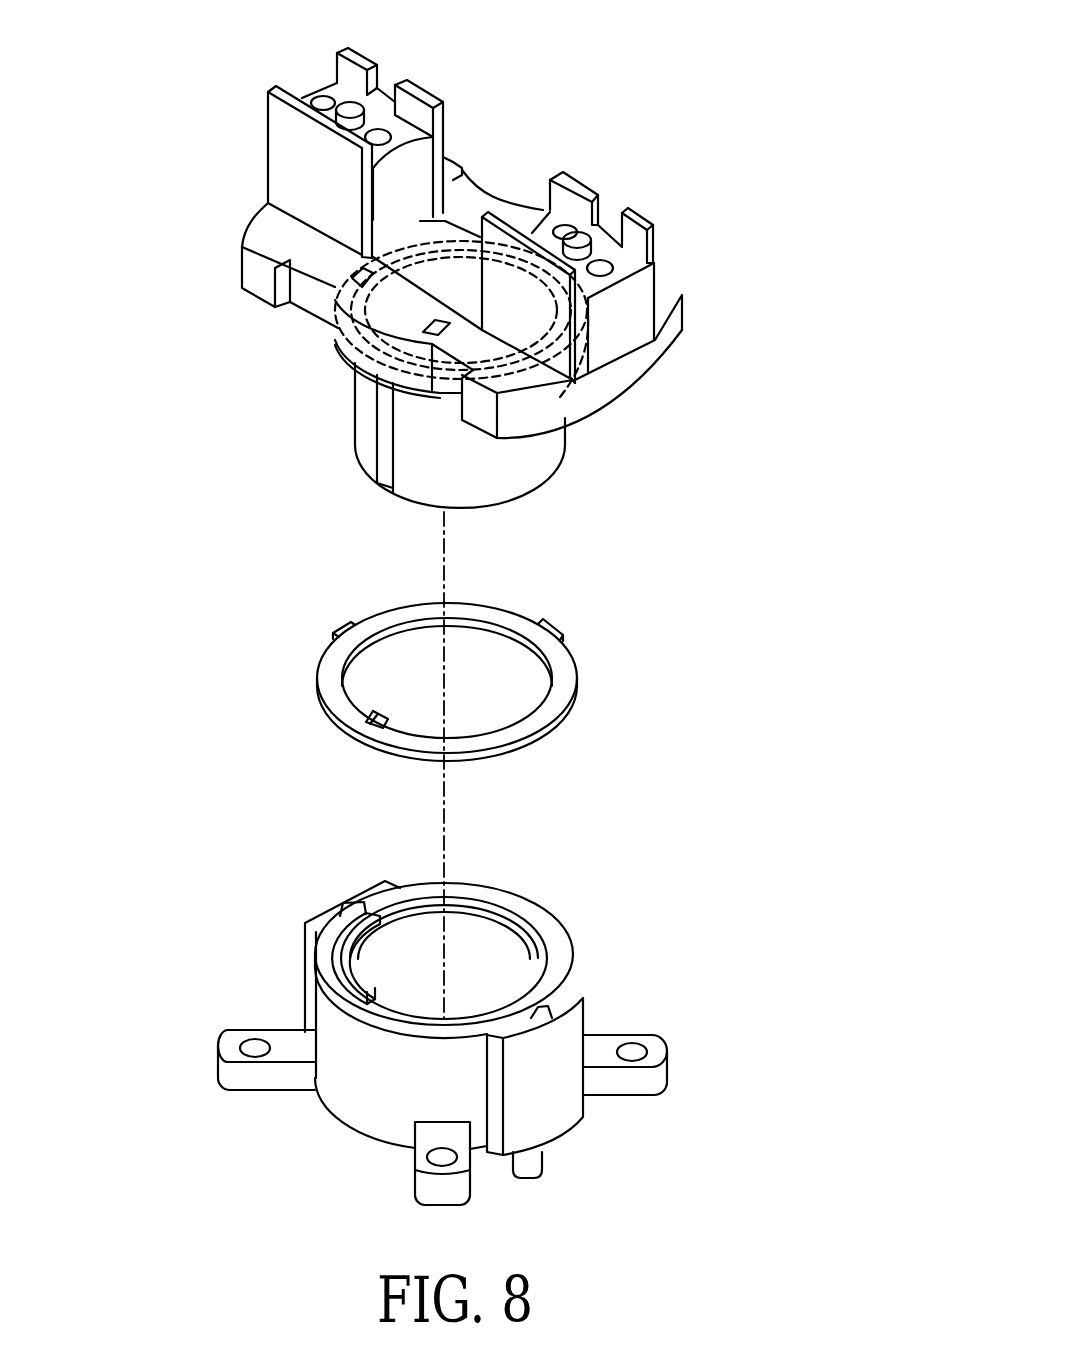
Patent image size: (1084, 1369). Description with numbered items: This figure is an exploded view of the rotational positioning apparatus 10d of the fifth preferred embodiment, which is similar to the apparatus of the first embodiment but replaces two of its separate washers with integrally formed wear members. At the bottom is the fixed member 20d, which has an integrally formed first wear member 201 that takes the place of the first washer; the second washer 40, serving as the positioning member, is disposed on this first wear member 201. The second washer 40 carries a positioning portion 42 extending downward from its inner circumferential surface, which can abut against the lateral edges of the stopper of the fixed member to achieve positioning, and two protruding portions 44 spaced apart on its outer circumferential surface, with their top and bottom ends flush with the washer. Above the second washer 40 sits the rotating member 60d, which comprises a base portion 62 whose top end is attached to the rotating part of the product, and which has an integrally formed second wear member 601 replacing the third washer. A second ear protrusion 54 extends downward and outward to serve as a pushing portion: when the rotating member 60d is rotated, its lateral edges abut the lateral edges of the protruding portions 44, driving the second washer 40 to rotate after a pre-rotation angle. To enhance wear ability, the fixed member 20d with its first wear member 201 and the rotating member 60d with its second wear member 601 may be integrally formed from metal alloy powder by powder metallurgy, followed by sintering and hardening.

The rotational positioning apparatus 10d is at (815, 35).
The rotating member 60d is at (640, 187).
The base portion 62 is at (273, 237).
The second wear member 601 is at (600, 327).
The second ear protrusion 54 is at (550, 392).
The second washer 40 is at (571, 609).
The protruding portions 44 is at (345, 622).
The positioning portion 42 is at (368, 722).
The fixed member 20d is at (635, 1116).
The first wear member 201 is at (484, 878).